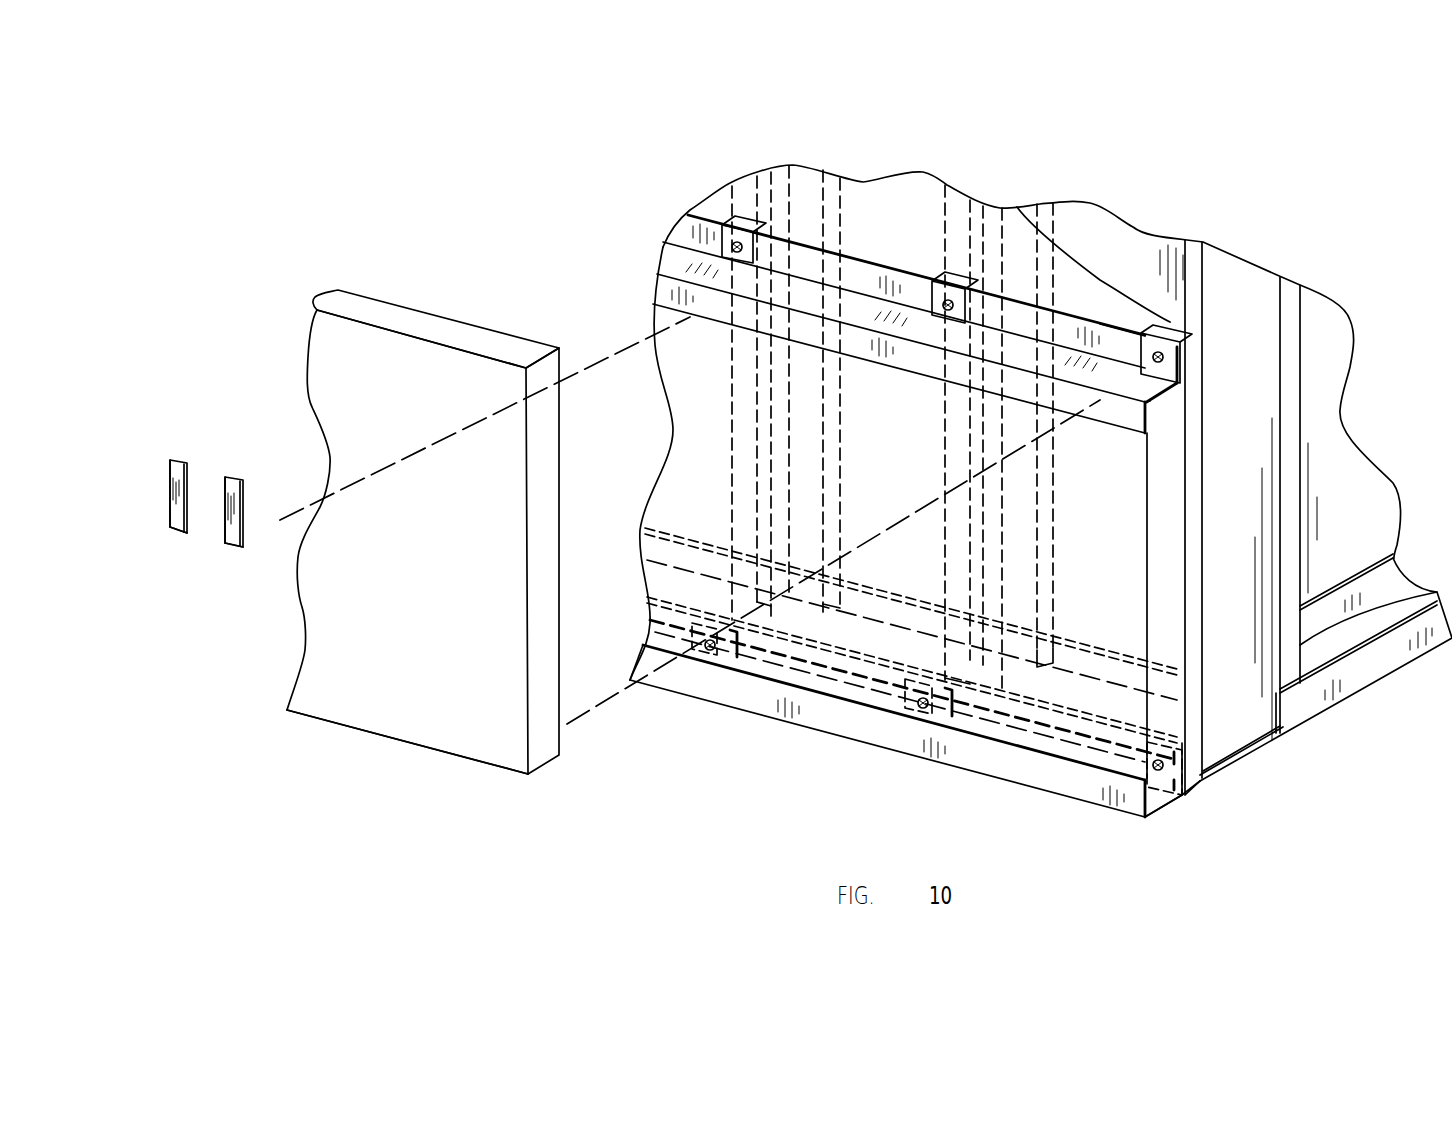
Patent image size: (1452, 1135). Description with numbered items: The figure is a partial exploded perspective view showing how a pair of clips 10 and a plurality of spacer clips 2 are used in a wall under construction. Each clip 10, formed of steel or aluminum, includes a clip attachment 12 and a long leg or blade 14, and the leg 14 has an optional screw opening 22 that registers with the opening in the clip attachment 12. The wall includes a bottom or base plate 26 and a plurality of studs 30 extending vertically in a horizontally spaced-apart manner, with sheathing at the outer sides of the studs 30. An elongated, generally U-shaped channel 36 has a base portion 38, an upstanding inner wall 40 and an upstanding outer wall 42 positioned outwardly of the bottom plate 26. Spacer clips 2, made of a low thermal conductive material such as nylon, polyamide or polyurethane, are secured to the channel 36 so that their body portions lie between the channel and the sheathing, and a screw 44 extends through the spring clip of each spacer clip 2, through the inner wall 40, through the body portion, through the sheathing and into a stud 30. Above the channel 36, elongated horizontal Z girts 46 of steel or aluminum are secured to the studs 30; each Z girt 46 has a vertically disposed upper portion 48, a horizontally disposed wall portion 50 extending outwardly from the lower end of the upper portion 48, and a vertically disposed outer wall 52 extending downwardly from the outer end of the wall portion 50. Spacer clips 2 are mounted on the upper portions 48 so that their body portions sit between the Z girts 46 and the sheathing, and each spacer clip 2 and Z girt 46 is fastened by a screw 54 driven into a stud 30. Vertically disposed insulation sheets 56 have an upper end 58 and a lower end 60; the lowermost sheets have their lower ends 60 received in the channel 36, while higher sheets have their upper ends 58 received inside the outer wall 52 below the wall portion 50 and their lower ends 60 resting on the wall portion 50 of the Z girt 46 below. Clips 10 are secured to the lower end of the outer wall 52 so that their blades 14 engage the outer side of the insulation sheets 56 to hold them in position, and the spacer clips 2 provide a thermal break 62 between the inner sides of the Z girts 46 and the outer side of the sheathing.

The spacer clip 2 is at (742, 210).
The clip 10 is at (172, 448).
The clip attachment 12 is at (203, 500).
The leg or blade 14 is at (243, 498).
The screw opening 22 is at (178, 517).
The bottom or base plate 26 is at (1315, 692).
The studs 30 is at (1048, 207).
The U-shaped channel 36 is at (1110, 822).
The base portion 38 is at (1168, 803).
The upstanding inner wall 40 is at (1035, 790).
The upstanding outer wall 42 is at (1185, 790).
The screw 44 is at (697, 652).
The Z girt 46 is at (1130, 325).
The upper portion 48 is at (1063, 333).
The wall portion 50 is at (1163, 397).
The outer wall 52 is at (1227, 455).
The screw 54 is at (1165, 347).
The insulation sheet 56 is at (527, 320).
The upper end 58 is at (435, 320).
The lower end 60 is at (438, 762).
The thermal break 62 is at (1193, 593).